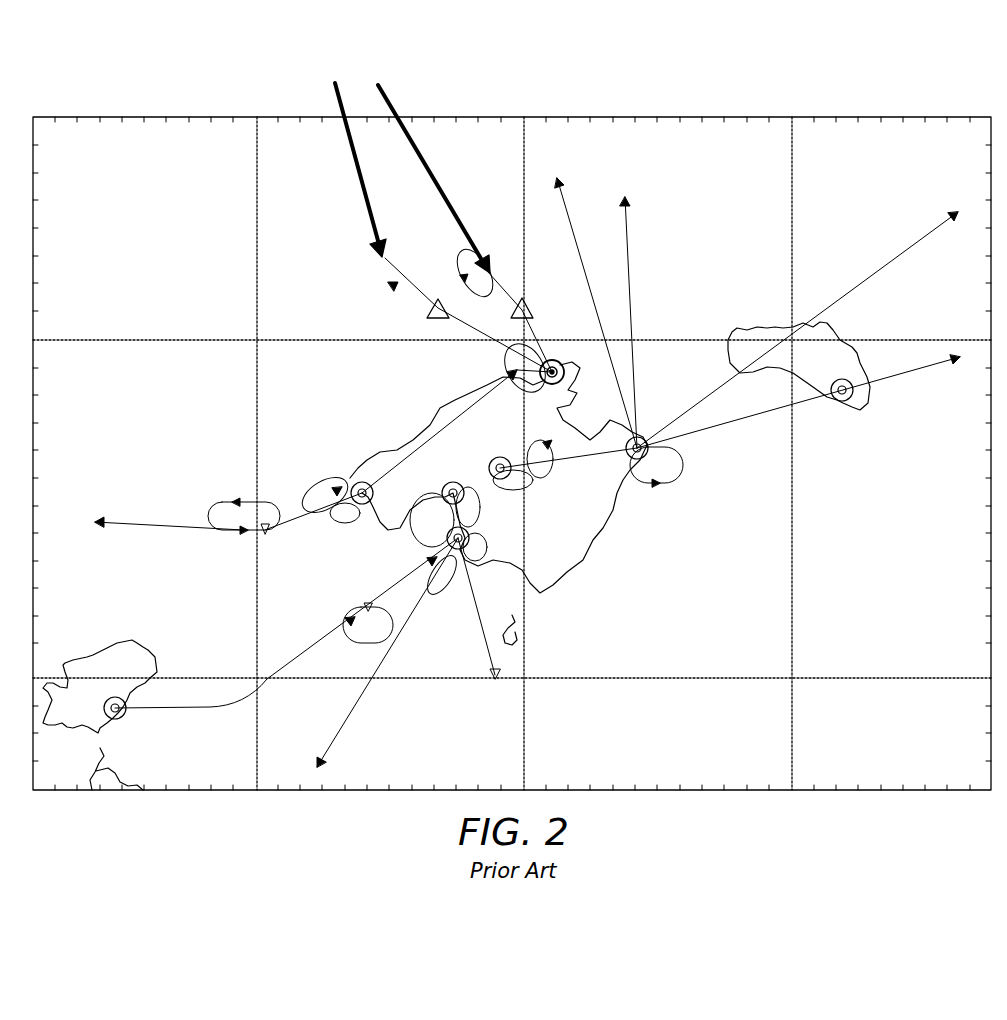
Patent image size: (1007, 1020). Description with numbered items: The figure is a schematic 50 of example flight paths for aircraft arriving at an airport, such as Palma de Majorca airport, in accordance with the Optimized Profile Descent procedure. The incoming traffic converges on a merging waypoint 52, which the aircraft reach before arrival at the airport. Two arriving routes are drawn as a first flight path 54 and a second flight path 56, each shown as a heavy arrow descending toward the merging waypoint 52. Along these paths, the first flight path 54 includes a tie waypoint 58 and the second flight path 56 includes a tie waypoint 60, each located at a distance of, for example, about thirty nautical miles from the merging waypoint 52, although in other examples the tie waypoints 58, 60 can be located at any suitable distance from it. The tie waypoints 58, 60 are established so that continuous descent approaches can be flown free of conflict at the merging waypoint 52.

The schematic 50 is at (598, 49).
The merging waypoint 52 is at (553, 360).
The first flight path 54 is at (335, 92).
The second flight path 56 is at (393, 106).
The tie waypoint 58 is at (428, 318).
The tie waypoint 60 is at (528, 300).